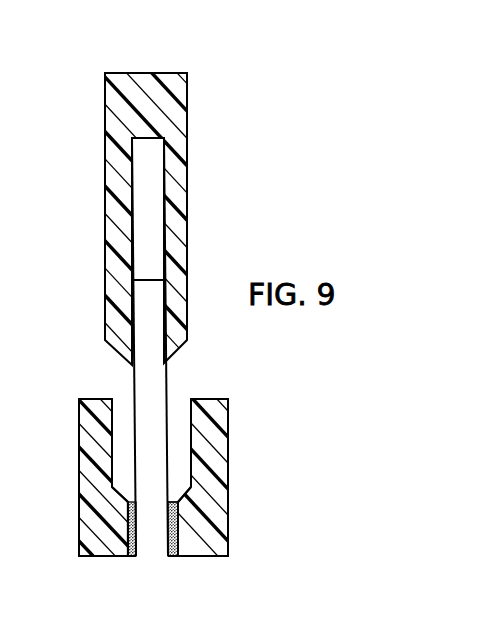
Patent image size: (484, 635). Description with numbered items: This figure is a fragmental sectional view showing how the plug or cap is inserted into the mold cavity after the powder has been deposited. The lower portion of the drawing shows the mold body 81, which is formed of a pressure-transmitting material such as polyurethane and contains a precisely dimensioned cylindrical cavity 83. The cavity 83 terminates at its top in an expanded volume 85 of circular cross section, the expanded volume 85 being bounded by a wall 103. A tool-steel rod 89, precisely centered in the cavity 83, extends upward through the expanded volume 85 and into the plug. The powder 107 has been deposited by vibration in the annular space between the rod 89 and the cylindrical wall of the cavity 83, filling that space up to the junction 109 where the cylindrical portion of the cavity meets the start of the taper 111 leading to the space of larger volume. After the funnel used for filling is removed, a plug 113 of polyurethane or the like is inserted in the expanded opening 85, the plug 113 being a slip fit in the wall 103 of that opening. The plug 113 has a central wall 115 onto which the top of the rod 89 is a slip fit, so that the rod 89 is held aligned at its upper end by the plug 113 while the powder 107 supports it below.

The body 81 is at (232, 441).
The cavity 83 is at (179, 490).
The expanded volume 85 is at (120, 433).
The rod 89 is at (145, 375).
The wall 103 is at (196, 421).
The powder 107 is at (130, 557).
The junction 109 is at (130, 508).
The taper 111 is at (192, 493).
The plug 113 is at (105, 128).
The central wall 115 is at (150, 178).